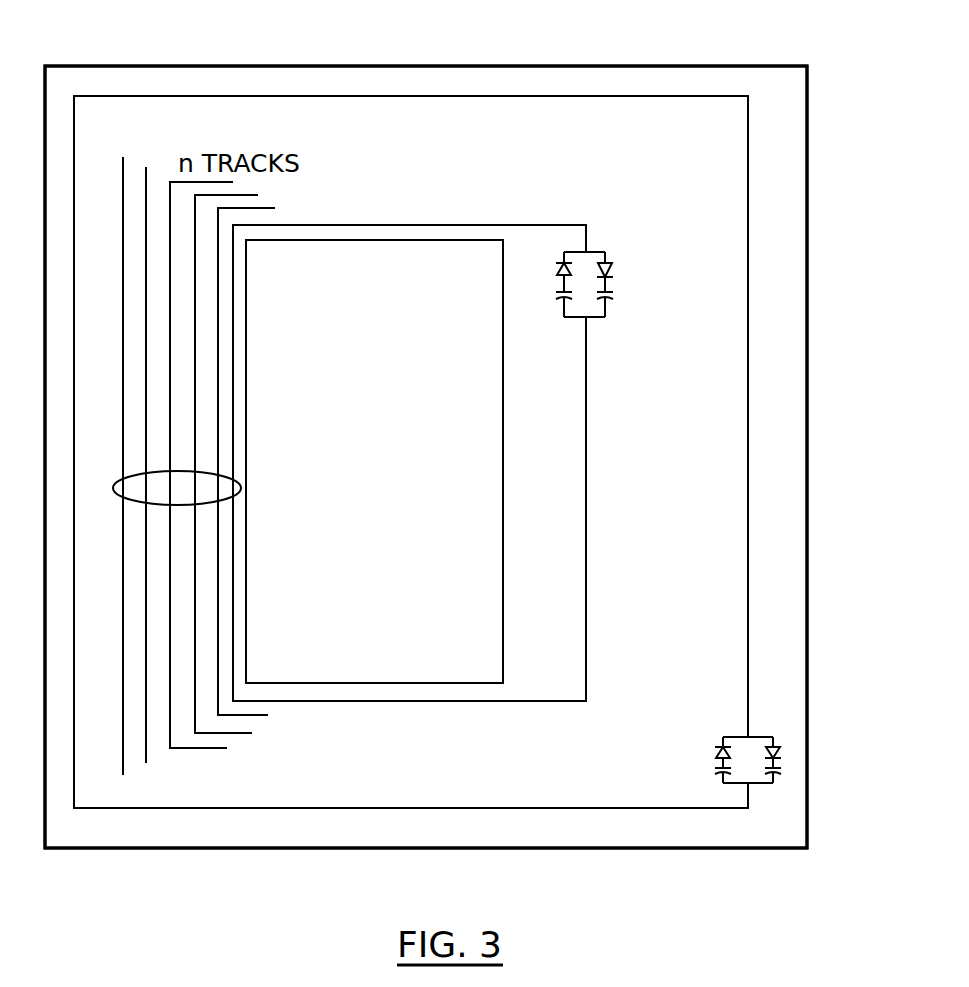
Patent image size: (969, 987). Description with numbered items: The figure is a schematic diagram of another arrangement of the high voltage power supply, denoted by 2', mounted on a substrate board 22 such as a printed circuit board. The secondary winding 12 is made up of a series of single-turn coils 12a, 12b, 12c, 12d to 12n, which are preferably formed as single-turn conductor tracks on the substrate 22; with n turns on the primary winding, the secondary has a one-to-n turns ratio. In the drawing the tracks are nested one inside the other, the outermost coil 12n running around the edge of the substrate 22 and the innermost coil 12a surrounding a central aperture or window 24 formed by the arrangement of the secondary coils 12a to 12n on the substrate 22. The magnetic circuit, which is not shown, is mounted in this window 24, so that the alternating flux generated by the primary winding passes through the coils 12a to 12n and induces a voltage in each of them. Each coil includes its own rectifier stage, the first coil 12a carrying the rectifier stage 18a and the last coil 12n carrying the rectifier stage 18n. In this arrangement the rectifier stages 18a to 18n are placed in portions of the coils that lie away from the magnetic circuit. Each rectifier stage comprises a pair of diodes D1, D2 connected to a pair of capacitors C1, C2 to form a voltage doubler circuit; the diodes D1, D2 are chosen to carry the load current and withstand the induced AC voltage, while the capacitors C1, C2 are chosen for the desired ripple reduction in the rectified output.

The high voltage power supply 2' is at (456, 457).
The substrate board 22 is at (541, 66).
The secondary winding 12 is at (116, 498).
The secondary coil 12a is at (620, 618).
The secondary coil 12b is at (268, 715).
The secondary coil 12c is at (252, 733).
The fourth conductor track 12d is at (227, 748).
The secondary coil 12n is at (748, 648).
The rectifier stage 18a is at (597, 236).
The rectifier stage 18n is at (717, 777).
The aperture or window 24 is at (483, 547).
The diode D1 is at (560, 264).
The diode D2 is at (608, 267).
The capacitor C1 is at (562, 300).
The capacitor C2 is at (608, 300).